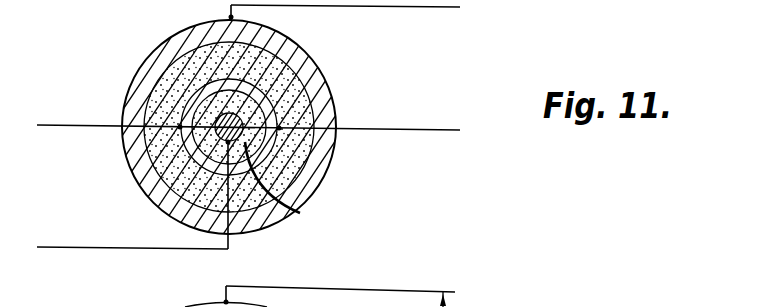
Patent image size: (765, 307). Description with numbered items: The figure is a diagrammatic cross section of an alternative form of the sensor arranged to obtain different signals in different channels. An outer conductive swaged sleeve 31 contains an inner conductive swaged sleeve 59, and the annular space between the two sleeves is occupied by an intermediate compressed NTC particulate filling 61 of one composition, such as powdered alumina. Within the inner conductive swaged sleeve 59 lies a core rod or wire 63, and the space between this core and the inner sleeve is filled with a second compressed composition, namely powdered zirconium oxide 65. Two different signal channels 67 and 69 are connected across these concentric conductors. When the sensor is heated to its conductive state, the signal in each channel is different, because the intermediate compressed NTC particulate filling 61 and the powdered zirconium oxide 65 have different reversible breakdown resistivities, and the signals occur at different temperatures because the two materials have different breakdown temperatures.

The outer conductive swaged sleeve 31 is at (323, 160).
The inner conductive swaged sleeve 59 is at (199, 100).
The intermediate compressed NTC particulate filling 61 is at (288, 80).
The core rod or wire 63 is at (228, 144).
The powdered zirconium oxide 65 is at (300, 213).
The signal channel 67 is at (45, 247).
The signal channel 69 is at (447, 7).